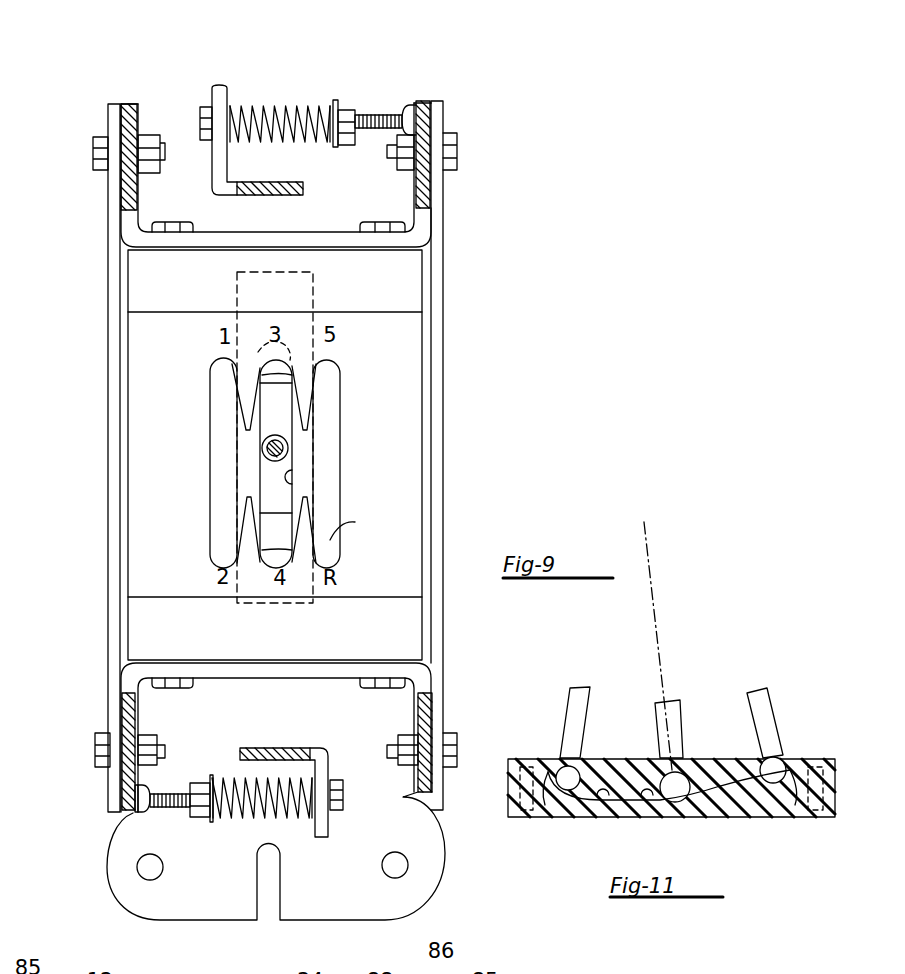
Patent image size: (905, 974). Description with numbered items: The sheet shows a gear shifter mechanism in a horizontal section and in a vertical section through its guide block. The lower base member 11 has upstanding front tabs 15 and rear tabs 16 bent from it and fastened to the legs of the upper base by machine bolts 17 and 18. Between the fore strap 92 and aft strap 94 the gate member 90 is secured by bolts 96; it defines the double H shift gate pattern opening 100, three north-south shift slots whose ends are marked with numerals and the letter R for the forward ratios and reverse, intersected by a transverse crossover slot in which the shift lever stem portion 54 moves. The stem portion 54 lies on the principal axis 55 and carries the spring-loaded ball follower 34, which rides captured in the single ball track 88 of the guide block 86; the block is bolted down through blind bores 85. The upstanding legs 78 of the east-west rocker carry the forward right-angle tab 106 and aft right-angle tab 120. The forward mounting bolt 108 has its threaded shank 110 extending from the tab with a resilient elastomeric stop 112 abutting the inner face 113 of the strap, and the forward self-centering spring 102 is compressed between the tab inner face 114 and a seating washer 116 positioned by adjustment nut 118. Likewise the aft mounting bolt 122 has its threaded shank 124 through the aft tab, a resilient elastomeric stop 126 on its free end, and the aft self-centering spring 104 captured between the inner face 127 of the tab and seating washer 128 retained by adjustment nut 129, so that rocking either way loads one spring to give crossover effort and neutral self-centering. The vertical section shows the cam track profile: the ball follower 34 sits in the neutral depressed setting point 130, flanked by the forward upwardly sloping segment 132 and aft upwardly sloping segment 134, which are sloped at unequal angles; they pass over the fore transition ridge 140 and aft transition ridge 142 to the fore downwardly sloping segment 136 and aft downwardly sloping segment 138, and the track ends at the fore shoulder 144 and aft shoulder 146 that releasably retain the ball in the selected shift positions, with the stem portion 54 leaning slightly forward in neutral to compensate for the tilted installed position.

In FIG. 9, the lower base member 11 is at (106, 653).
In FIG. 9, the front tabs 15 is at (127, 104).
In FIG. 9, the rear tabs 16 is at (118, 717).
In FIG. 9, the machine bolts 17 is at (107, 130).
In FIG. 9, the machine bolts 18 is at (95, 750).
In FIG. 9, the ball follower 34 is at (292, 447).
In FIG. 11, the ball follower 34 is at (555, 760).
In FIG. 9, the stem portion 54 is at (277, 456).
In FIG. 11, the stem portion 54 is at (699, 684).
In FIG. 11, the principal axis 55 is at (660, 590).
In FIG. 9, the upstanding legs 78 is at (270, 184).
In FIG. 11, the blind bores 85 is at (522, 815).
In FIG. 9, the guide block 86 is at (325, 300).
In FIG. 11, the guide block 86 is at (685, 810).
In FIG. 9, the ball track 88 is at (293, 477).
In FIG. 11, the ball track 88 is at (660, 800).
In FIG. 9, the gate member 90 is at (428, 357).
In FIG. 9, the fore strap 92 is at (232, 247).
In FIG. 9, the aft strap 94 is at (240, 668).
In FIG. 9, the bolts 96 is at (168, 225).
In FIG. 9, the shift gate pattern opening 100 is at (330, 525).
In FIG. 9, the forward self-centering spring 102 is at (278, 105).
In FIG. 9, the aft self-centering spring 104 is at (280, 818).
In FIG. 9, the forward right-angle tab 106 is at (245, 100).
In FIG. 9, the forward mounting bolt 108 is at (210, 112).
In FIG. 9, the threaded shank 110 is at (378, 118).
In FIG. 9, the resilient elastomeric stop 112 is at (418, 104).
In FIG. 9, the inner face 113 is at (138, 790).
In FIG. 9, the tab inner face 114 is at (232, 95).
In FIG. 9, the seating washer 116 is at (343, 108).
In FIG. 9, the adjustment nut 118 is at (350, 120).
In FIG. 9, the aft right-angle tab 120 is at (330, 838).
In FIG. 9, the aft mounting bolt 122 is at (343, 800).
In FIG. 9, the threaded shank 124 is at (165, 797).
In FIG. 9, the resilient elastomeric stop 126 is at (147, 814).
In FIG. 9, the inner face 127 is at (325, 842).
In FIG. 9, the seating washer 128 is at (210, 820).
In FIG. 9, the adjustment nut 129 is at (192, 816).
In FIG. 11, the neutral depressed setting point 130 is at (675, 780).
In FIG. 9, the forward upwardly sloping segment 132 is at (270, 412).
In FIG. 11, the forward upwardly sloping segment 132 is at (617, 760).
In FIG. 9, the aft upwardly sloping segment 134 is at (270, 490).
In FIG. 11, the aft upwardly sloping segment 134 is at (692, 745).
In FIG. 9, the fore downwardly sloping segment 136 is at (283, 372).
In FIG. 11, the fore downwardly sloping segment 136 is at (600, 800).
In FIG. 9, the aft downwardly sloping segment 138 is at (272, 550).
In FIG. 11, the aft downwardly sloping segment 138 is at (733, 760).
In FIG. 9, the fore transition ridge 140 is at (285, 392).
In FIG. 11, the fore transition ridge 140 is at (600, 760).
In FIG. 9, the aft transition ridge 142 is at (285, 515).
In FIG. 11, the aft transition ridge 142 is at (700, 758).
In FIG. 11, the fore shoulder 144 is at (567, 820).
In FIG. 11, the aft shoulder 146 is at (785, 815).